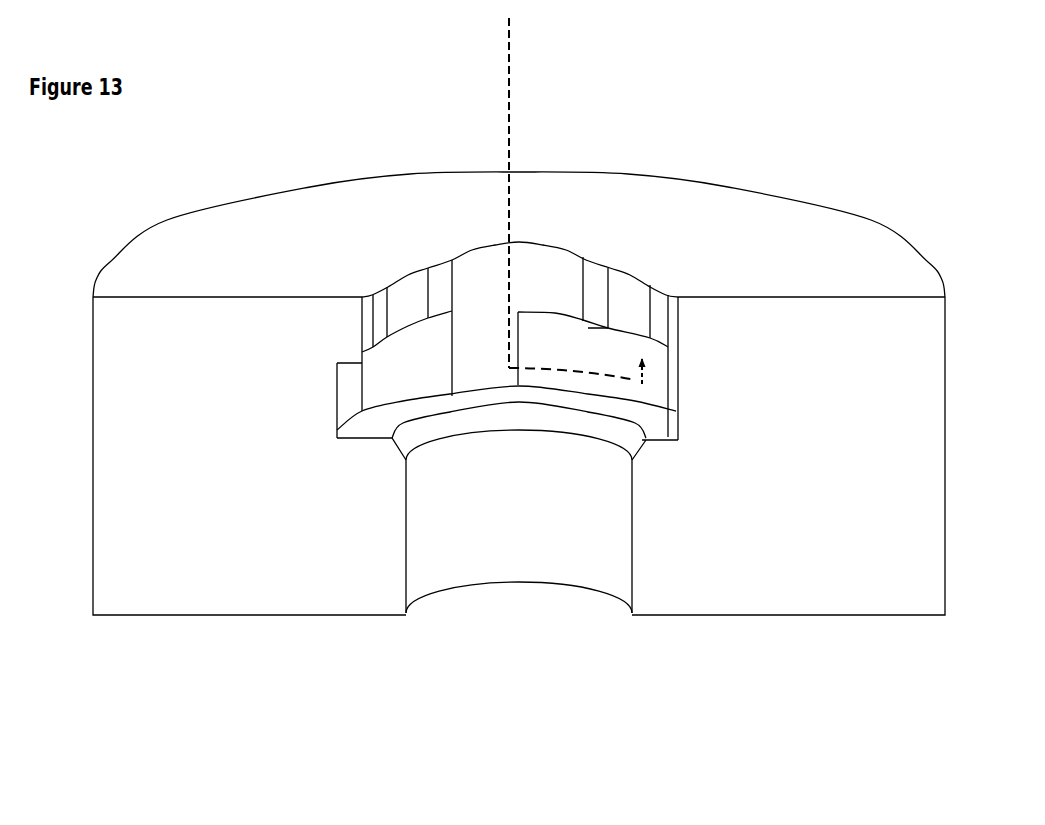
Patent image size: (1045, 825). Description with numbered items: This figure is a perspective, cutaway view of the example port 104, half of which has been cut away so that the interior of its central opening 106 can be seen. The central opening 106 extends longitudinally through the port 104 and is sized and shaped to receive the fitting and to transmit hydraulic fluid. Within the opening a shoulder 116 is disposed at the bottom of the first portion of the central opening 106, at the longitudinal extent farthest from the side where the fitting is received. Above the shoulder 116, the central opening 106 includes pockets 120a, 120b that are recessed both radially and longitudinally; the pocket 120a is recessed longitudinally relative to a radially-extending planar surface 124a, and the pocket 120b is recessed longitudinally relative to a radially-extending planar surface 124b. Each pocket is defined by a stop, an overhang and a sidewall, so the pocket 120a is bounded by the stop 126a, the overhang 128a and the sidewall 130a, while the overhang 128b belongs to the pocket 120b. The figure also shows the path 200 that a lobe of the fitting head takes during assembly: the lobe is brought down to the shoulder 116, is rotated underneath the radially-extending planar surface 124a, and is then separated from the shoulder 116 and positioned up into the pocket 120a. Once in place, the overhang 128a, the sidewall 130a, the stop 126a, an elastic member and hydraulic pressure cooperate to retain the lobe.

The port 104 is at (166, 217).
The central opening 106 is at (507, 600).
The shoulder 116 is at (474, 396).
The pocket 120a is at (658, 376).
The pocket 120b is at (411, 356).
The radially-extending planar surface 124a is at (556, 322).
The radially-extending planar surface 124b is at (353, 367).
The stop 126a is at (602, 327).
The overhang 128a is at (633, 300).
The overhang 128b is at (400, 305).
The sidewall 130a is at (663, 362).
The path 200 is at (506, 88).